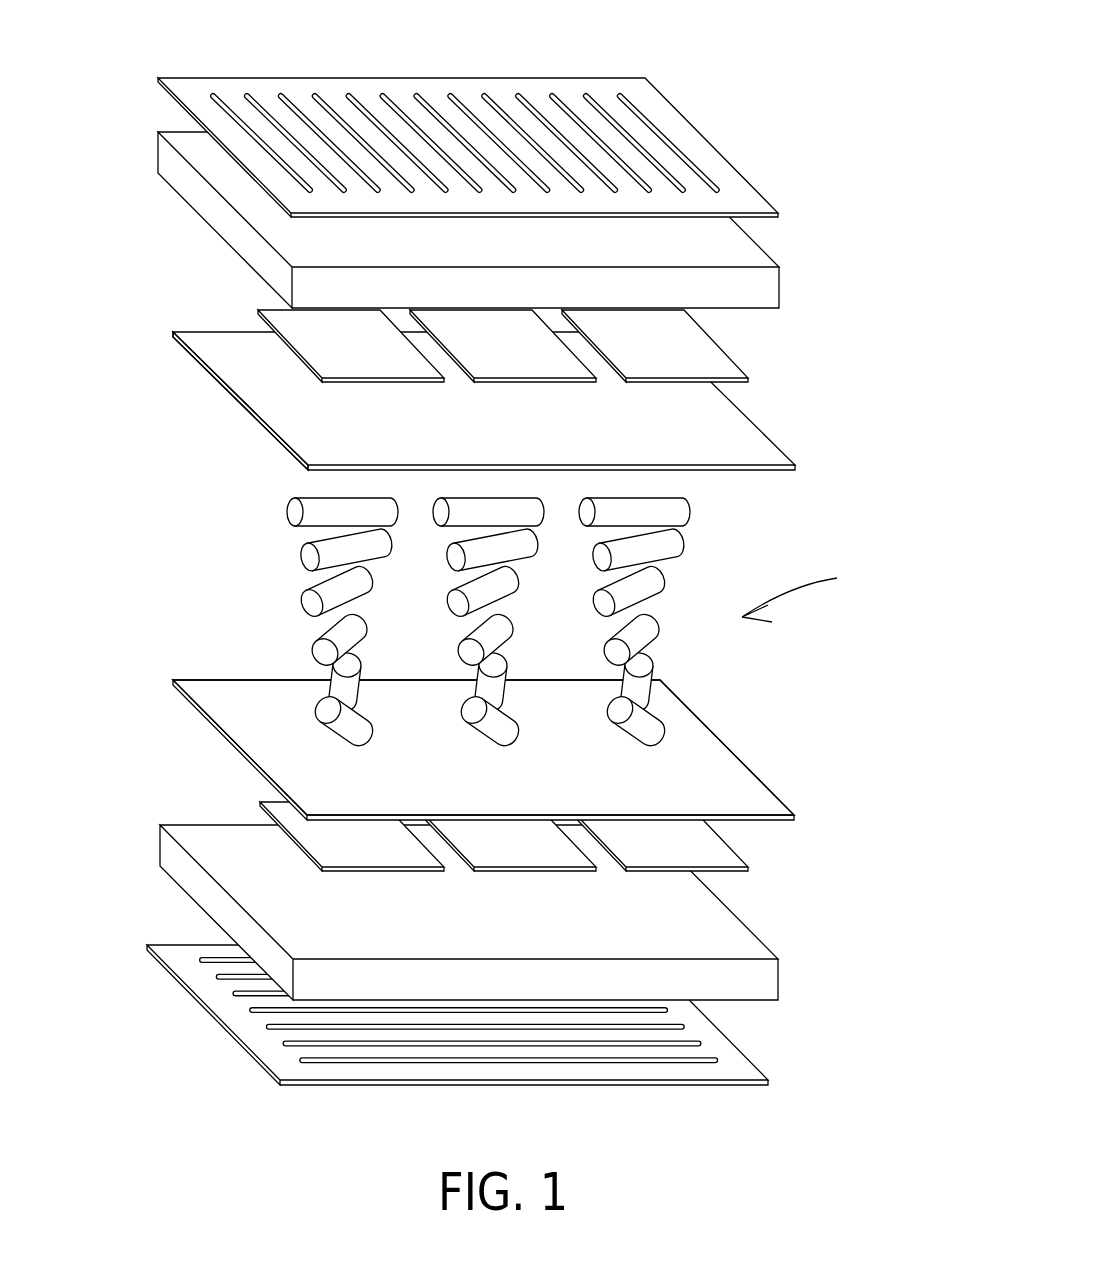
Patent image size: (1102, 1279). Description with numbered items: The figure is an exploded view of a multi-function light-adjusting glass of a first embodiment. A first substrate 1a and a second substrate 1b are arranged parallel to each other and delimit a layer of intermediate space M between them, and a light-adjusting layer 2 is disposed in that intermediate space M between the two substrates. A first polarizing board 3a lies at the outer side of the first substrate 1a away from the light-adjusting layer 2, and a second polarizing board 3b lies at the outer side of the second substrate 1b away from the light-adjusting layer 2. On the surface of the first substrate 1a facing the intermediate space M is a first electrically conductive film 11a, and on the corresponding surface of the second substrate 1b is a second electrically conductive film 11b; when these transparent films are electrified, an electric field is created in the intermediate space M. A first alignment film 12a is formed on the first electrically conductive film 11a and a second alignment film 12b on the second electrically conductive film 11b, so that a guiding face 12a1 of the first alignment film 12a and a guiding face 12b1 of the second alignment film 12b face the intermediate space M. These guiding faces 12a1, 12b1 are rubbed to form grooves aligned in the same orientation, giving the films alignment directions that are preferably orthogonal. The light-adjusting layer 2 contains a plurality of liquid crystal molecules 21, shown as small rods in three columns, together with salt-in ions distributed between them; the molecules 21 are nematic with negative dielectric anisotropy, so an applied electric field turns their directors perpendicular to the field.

The first substrate 1a is at (757, 253).
The second substrate 1b is at (168, 847).
The first polarizing board 3a is at (658, 108).
The second polarizing board 3b is at (182, 950).
The first electrically conductive film 11a is at (706, 351).
The second electrically conductive film 11b is at (270, 804).
The first alignment film 12a is at (539, 416).
The guiding face 12a1 is at (282, 460).
The second alignment film 12b is at (419, 748).
The guiding face 12b1 is at (244, 713).
The light-adjusting layer 2 is at (431, 624).
The liquid crystal molecules 21 is at (296, 514).
The intermediate space M is at (802, 596).